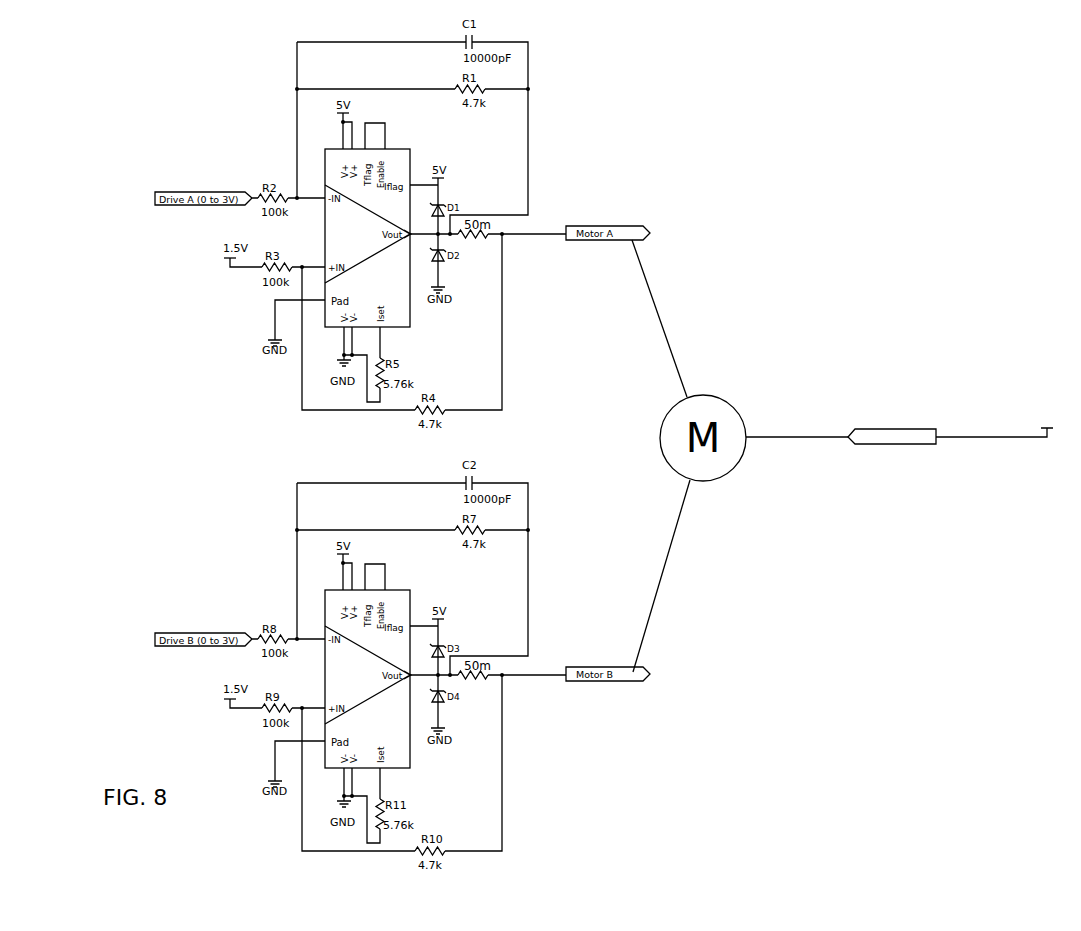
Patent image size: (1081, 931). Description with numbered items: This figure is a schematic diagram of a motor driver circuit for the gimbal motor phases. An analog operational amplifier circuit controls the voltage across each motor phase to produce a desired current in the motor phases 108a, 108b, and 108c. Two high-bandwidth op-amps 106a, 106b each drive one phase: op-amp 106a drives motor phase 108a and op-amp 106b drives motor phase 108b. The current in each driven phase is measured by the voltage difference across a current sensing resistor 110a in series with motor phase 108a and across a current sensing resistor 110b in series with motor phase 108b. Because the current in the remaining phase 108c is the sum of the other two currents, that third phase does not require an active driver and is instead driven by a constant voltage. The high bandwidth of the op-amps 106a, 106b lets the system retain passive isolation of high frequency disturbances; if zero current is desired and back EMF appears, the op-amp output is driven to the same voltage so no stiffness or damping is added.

The op-amp 106a is at (323, 156).
The op-amp 106b is at (315, 606).
The motor phase 108a is at (678, 355).
The motor phase 108b is at (665, 592).
The motor phase 108c is at (782, 447).
The current sensing resistor 110a is at (562, 297).
The current sensing resistor 110b is at (587, 773).